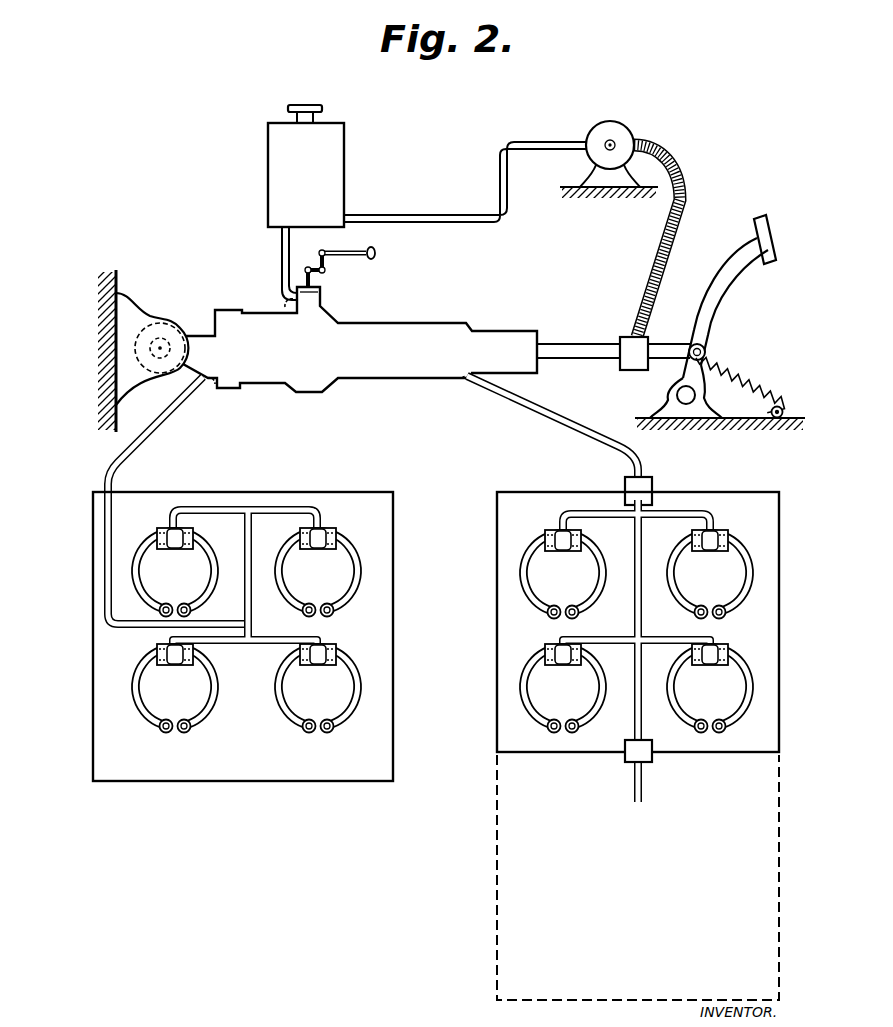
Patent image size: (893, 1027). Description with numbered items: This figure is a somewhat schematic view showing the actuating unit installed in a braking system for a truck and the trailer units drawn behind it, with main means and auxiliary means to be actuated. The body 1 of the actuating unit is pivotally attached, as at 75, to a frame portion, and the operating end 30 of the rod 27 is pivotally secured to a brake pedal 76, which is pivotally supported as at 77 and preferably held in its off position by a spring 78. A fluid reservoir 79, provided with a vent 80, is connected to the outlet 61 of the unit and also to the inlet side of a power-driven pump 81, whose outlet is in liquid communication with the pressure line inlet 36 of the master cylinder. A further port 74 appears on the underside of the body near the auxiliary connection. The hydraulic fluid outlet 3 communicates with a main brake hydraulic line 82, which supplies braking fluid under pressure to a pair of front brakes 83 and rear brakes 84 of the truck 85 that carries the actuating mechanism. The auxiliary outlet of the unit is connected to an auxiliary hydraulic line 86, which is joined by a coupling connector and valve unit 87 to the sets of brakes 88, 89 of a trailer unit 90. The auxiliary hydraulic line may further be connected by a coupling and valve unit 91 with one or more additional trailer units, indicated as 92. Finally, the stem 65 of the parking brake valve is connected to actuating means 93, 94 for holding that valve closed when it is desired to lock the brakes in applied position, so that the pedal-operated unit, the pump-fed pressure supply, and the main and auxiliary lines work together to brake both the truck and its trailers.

The body 1 is at (285, 393).
The hydraulic fluid outlet 3 is at (210, 388).
The rod 27 is at (604, 360).
The operating end 30 is at (664, 358).
The pressure line inlet 36 is at (624, 338).
The outlet 61 is at (283, 304).
The stem 65 is at (320, 290).
The outlet port 74 is at (462, 382).
The pivotal attachment 75 is at (163, 340).
The brake pedal 76 is at (712, 308).
The pivotal support 77 is at (684, 402).
The spring 78 is at (735, 372).
The fluid reservoir 79 is at (280, 163).
The vent 80 is at (323, 116).
The power-driven pump 81 is at (600, 122).
The main brake hydraulic line 82 is at (141, 446).
The front brakes 83 is at (293, 589).
The rear brakes 84 is at (275, 687).
The truck 85 is at (221, 636).
The auxiliary hydraulic line 86 is at (553, 418).
The coupling connector and valve unit 87 is at (625, 482).
The brakes 88 is at (670, 588).
The brakes 89 is at (672, 676).
The trailer unit 90 is at (657, 622).
The coupling and valve unit 91 is at (654, 762).
The additional trailer units 92 is at (782, 828).
The actuating means 93 is at (332, 250).
The actuating means 94 is at (378, 253).